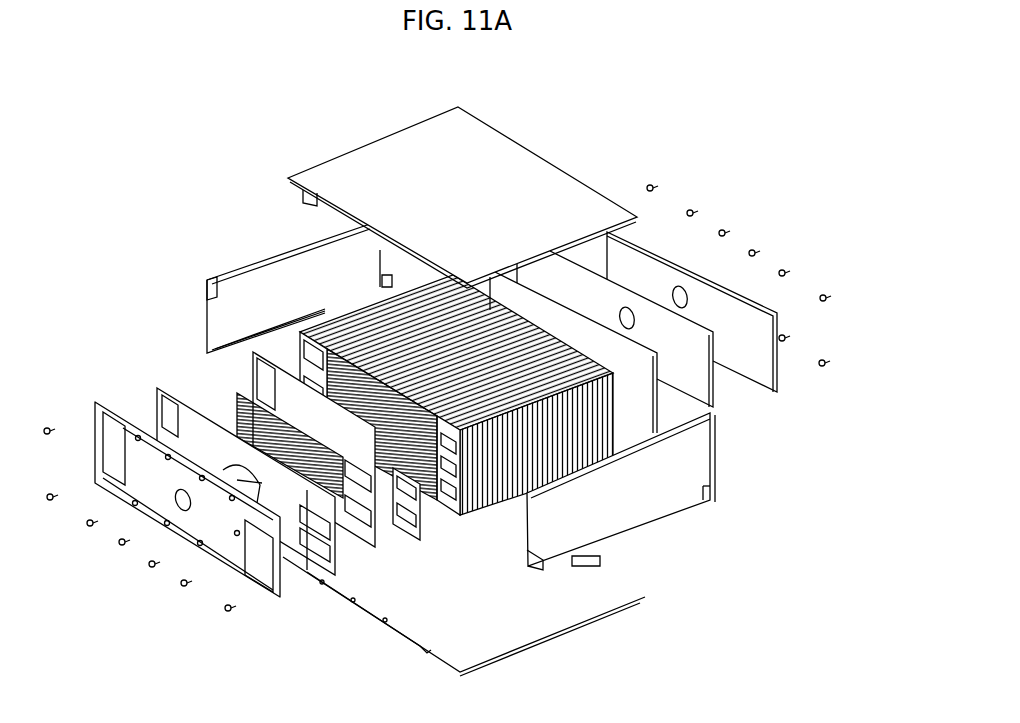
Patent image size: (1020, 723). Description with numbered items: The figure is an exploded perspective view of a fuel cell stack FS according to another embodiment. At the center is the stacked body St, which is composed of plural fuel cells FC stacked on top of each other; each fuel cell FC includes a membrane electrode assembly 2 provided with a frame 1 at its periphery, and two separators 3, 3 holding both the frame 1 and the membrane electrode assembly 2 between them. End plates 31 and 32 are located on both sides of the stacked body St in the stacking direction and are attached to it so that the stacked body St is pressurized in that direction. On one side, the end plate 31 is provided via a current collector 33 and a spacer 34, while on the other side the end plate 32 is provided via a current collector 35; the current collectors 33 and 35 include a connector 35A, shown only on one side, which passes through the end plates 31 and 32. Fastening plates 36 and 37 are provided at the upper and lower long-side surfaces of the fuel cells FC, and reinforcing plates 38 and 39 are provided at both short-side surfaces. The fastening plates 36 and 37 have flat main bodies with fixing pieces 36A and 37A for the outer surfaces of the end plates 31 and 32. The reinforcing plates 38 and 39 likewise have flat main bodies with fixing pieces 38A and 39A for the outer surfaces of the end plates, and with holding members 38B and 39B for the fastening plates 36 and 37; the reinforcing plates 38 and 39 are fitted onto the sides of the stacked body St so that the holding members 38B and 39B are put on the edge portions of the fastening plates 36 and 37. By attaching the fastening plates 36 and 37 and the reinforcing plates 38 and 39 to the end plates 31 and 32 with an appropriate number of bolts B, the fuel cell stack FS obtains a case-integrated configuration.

The fuel cell stack FS is at (586, 153).
The fuel cell FC is at (457, 505).
The stacked body St is at (620, 407).
The frame 1 is at (387, 510).
The membrane electrode assembly 2 is at (390, 507).
The separator 3 is at (343, 507).
The end plate 31 is at (720, 273).
The end plate 32 is at (167, 507).
The current collector 33 is at (713, 332).
The spacer 34 is at (767, 393).
The current collector 35 is at (193, 410).
The connector 35A is at (262, 486).
The fastening plate 36 is at (392, 160).
The fixing piece 36A is at (313, 193).
The fastening plate 37 is at (472, 648).
The fixing piece 37A is at (333, 590).
The reinforcing plate 38 is at (657, 497).
The fixing piece 38A is at (600, 613).
The holding member 38B is at (657, 437).
The reinforcing plate 39 is at (247, 287).
The fixing piece 39A is at (208, 350).
The holding member 39B is at (307, 313).
The bolt B is at (655, 188).